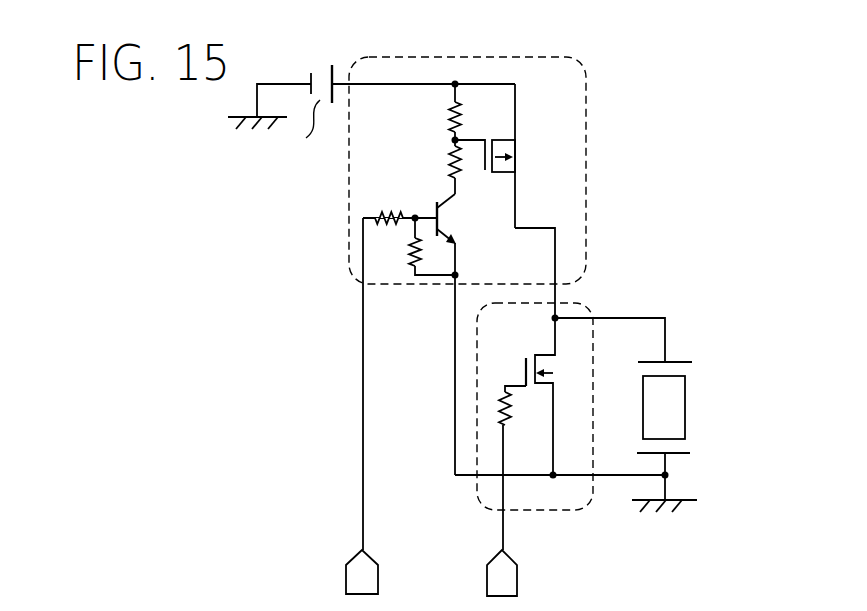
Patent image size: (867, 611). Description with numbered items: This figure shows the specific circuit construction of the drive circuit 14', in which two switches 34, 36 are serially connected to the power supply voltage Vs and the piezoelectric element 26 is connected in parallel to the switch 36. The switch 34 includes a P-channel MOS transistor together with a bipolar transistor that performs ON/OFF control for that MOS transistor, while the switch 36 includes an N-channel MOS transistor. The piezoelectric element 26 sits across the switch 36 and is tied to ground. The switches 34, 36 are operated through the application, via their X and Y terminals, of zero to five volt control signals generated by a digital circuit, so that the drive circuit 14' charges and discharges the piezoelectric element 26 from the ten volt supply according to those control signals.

The drive circuit 14' is at (480, 320).
The switch 34 is at (577, 160).
The switch 36 is at (582, 306).
The piezoelectric element 26 is at (680, 405).